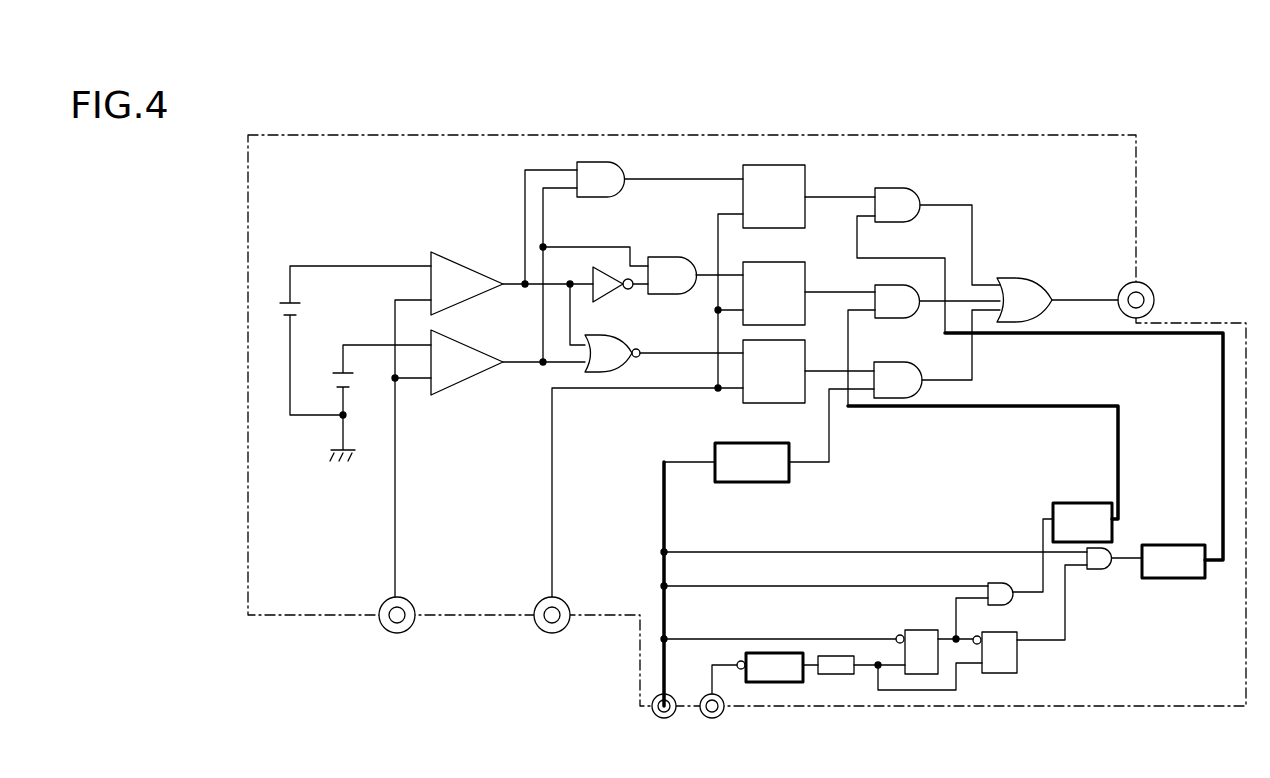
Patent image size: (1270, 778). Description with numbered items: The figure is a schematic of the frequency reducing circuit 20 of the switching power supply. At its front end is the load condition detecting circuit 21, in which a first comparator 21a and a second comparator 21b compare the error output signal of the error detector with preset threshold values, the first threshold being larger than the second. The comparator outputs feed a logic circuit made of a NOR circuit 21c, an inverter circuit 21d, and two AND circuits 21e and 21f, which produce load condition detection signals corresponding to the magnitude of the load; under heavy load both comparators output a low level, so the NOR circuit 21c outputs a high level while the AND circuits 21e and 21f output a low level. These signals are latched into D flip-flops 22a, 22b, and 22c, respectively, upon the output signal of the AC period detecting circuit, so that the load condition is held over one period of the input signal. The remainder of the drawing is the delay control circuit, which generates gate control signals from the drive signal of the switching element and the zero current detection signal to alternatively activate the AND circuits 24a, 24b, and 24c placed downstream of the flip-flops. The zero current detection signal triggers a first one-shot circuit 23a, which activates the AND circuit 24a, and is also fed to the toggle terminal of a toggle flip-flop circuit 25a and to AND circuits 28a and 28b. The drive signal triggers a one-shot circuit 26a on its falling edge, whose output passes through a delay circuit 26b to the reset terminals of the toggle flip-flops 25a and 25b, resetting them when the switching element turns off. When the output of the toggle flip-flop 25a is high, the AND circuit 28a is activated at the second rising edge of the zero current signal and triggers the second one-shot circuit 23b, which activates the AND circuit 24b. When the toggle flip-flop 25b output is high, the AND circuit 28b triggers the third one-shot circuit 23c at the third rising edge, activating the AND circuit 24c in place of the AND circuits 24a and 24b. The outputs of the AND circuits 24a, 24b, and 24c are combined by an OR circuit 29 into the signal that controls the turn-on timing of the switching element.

The frequency reducing circuit 20 is at (1108, 168).
The load condition detecting circuit 21 is at (511, 370).
The first comparator 21a is at (462, 338).
The second comparator 21b is at (457, 262).
The NOR circuit 21c is at (628, 337).
The inverter circuit 21d is at (606, 297).
The AND circuit 21e is at (670, 257).
The AND circuit 21f is at (600, 198).
The D flip-flop 22a is at (772, 404).
The D flip-flop 22b is at (778, 262).
The D flip-flop 22c is at (778, 165).
The first one-shot circuit 23a is at (715, 443).
The second one-shot circuit 23b is at (1071, 503).
The third one-shot circuit 23c is at (1164, 545).
The AND circuit 24a is at (904, 362).
The AND circuit 24b is at (890, 320).
The AND circuit 24c is at (915, 190).
The toggle flip-flop circuit 25a is at (914, 630).
The toggle flip-flop circuit 25b is at (998, 673).
The one-shot circuit 26a is at (775, 682).
The delay circuit 26b is at (838, 674).
The AND circuit 28a is at (997, 583).
The AND circuit 28b is at (1098, 570).
The OR circuit 29 is at (1036, 282).